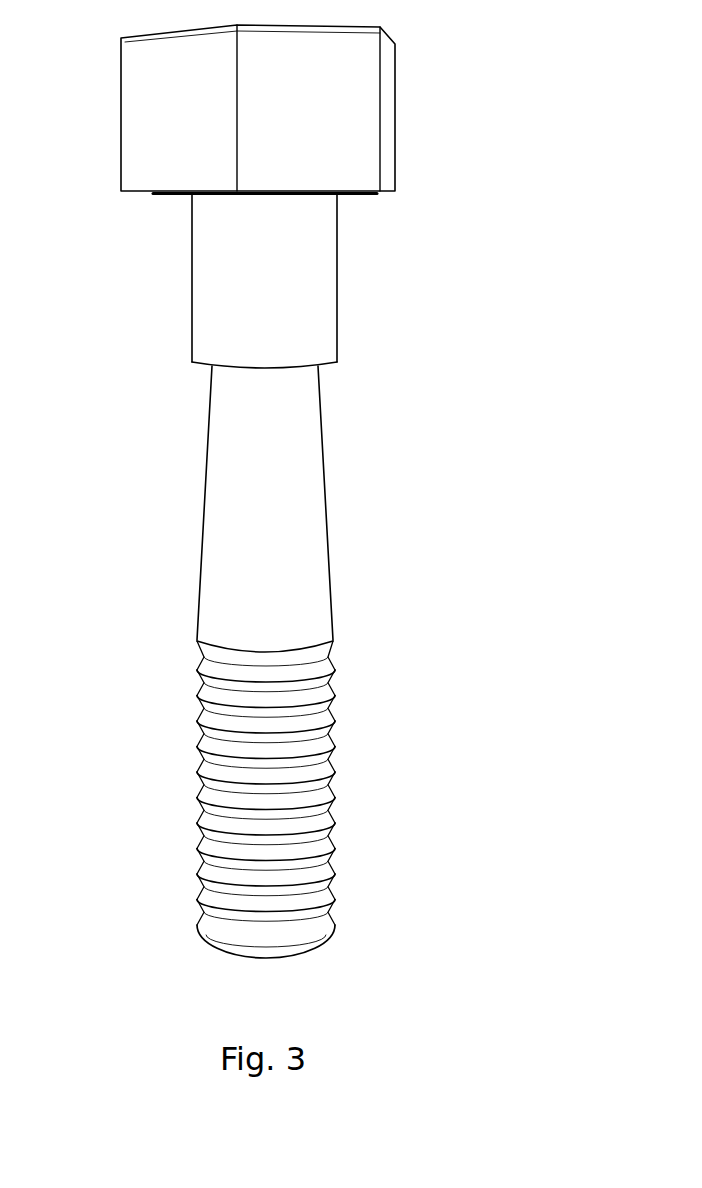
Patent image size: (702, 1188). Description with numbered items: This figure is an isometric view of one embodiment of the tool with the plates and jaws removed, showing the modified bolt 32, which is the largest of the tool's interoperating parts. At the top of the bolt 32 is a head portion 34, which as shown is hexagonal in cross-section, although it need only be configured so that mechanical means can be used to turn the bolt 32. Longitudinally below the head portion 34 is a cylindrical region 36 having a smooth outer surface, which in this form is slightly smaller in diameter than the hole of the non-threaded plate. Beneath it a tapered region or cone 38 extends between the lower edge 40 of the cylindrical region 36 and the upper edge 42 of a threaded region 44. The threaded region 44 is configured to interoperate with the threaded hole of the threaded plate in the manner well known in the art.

The modified bolt 32 is at (299, 491).
The head portion 34 is at (395, 100).
The cylindrical region 36 is at (336, 275).
The tapered region or cone 38 is at (329, 548).
The lower edge of the cylindrical region 40 is at (336, 362).
The upper edge of the threaded region 42 is at (334, 642).
The threaded region 44 is at (336, 818).